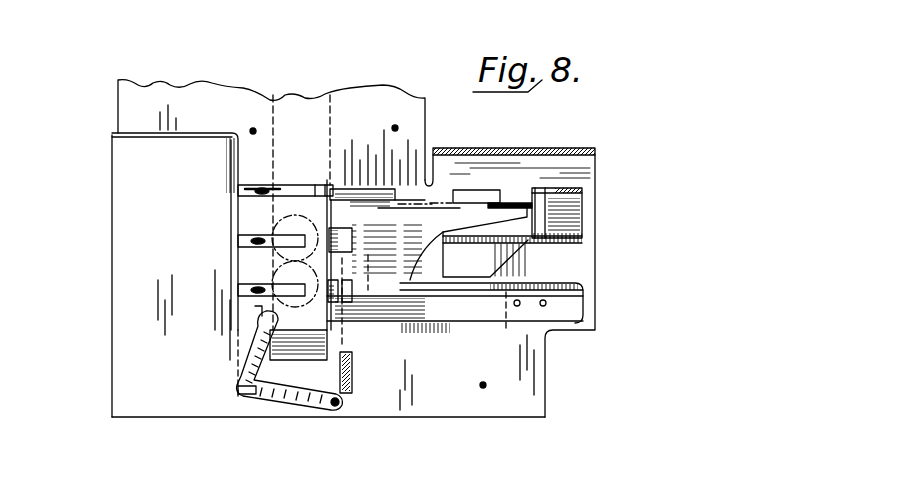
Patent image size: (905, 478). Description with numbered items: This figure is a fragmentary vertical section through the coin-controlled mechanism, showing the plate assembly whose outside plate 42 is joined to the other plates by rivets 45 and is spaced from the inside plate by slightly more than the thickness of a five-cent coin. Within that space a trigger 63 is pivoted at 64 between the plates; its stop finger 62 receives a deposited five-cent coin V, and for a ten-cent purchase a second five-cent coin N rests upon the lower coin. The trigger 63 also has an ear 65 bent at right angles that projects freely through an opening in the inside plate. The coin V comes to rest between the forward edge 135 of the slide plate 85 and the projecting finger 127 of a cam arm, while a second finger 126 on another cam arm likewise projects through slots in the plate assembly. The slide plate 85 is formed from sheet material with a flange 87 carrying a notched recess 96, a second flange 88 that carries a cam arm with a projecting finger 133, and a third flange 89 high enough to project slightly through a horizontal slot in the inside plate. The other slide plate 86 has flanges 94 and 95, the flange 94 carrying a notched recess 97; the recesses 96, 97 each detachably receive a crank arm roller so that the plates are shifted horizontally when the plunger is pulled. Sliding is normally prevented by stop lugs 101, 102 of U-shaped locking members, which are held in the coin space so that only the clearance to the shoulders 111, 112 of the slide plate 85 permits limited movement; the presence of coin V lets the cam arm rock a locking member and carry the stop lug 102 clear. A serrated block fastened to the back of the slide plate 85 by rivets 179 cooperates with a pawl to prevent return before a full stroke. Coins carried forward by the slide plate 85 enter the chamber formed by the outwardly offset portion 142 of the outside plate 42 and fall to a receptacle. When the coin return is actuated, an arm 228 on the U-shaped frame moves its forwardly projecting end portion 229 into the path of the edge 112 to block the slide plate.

The outside plate 42 is at (508, 412).
The rivets 45 is at (398, 128).
The outwardly offset portion 142 is at (130, 417).
The projecting finger 133 is at (262, 188).
The forward edge 135 is at (313, 200).
The third flange 89 is at (362, 192).
The stop lug 101 is at (338, 228).
The shoulder 111 is at (348, 244).
The forwardly projecting end portion 229 is at (356, 285).
The finger 126 is at (257, 240).
The finger 127 is at (262, 290).
The five-cent coin N is at (277, 262).
The five-cent coin V is at (273, 280).
The stop finger 62 is at (258, 312).
The trigger 63 is at (300, 400).
The pivot 64 is at (337, 406).
The ear 65 is at (247, 396).
The arm 228 is at (353, 378).
The stop lug 102 is at (343, 300).
The shoulder 112 is at (355, 298).
The flange 87 is at (586, 282).
The notched recess 96 is at (550, 293).
The slide plate 85 is at (497, 318).
The rivets 179 is at (519, 306).
The slide plate 86 is at (574, 218).
The flange 95 is at (578, 190).
The notched recess 97 is at (548, 190).
The flange 94 is at (584, 242).
The second flange 88 is at (495, 203).